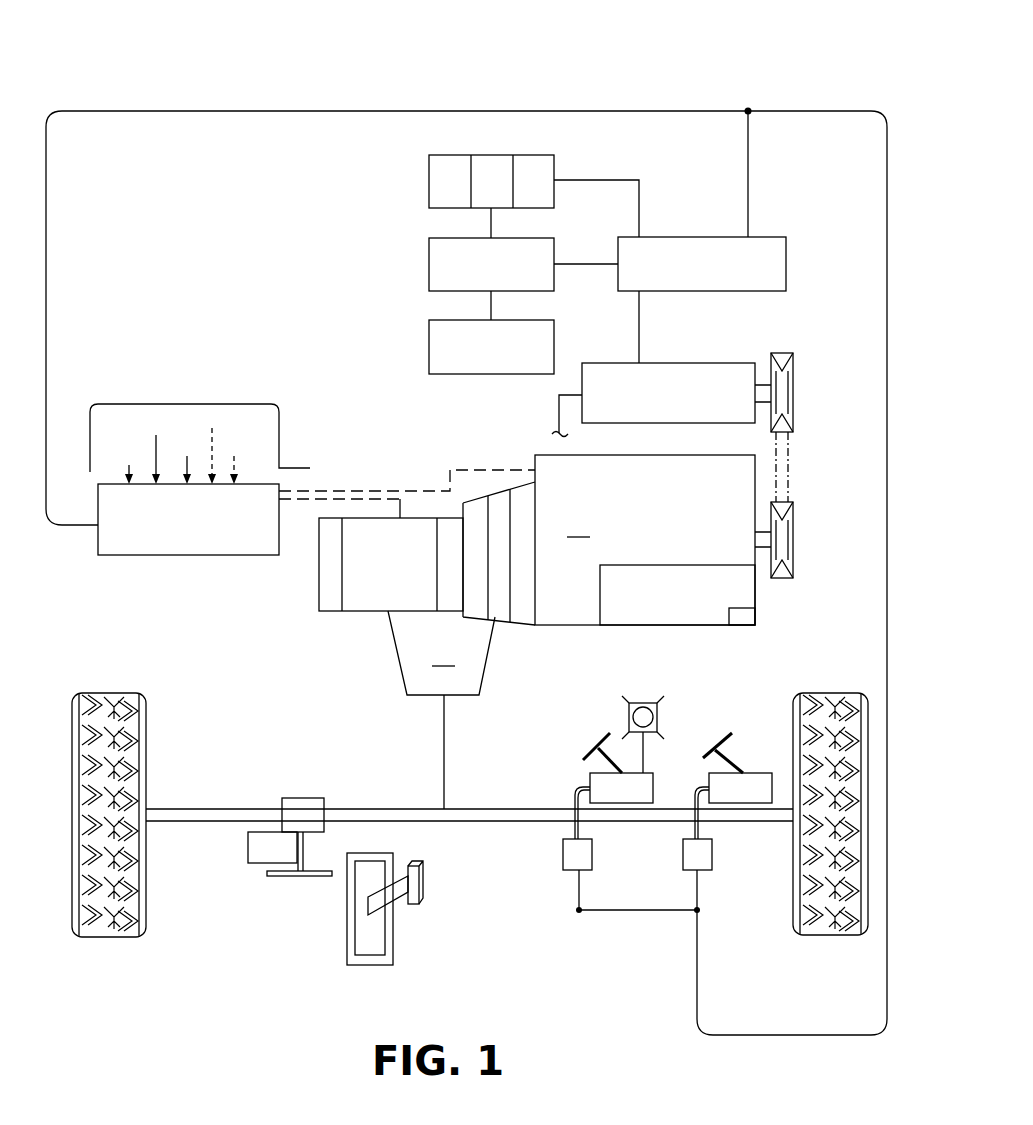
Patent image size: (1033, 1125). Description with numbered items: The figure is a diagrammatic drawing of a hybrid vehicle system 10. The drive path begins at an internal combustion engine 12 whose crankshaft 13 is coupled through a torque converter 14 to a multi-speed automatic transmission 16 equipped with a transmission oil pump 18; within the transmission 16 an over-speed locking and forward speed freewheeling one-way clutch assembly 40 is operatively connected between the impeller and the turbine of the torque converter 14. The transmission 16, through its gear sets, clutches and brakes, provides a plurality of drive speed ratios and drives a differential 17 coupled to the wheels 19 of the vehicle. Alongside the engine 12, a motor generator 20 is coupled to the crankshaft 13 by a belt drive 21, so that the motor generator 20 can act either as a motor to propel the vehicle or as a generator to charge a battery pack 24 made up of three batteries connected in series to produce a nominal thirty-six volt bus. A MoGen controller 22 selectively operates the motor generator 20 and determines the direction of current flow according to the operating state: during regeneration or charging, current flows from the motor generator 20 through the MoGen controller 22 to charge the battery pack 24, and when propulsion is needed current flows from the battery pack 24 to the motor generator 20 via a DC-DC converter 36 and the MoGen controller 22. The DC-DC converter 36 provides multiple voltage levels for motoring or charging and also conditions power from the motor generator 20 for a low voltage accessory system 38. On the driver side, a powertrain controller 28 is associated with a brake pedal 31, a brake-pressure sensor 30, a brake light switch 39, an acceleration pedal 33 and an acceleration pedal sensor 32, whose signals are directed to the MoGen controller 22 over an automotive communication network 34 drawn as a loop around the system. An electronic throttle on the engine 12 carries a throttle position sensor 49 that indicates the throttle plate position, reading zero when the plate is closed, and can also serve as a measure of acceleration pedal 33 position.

The hybrid vehicle system 10 is at (305, 87).
The internal combustion engine 12 is at (645, 540).
The crankshaft 13 is at (760, 540).
The torque converter 14 is at (524, 624).
The multi-speed automatic transmission 16 is at (365, 614).
The differential 17 is at (441, 710).
The transmission oil pump 18 is at (450, 528).
The wheels 19 is at (104, 917).
The motor generator 20 is at (727, 372).
The belt drive 21 is at (790, 478).
The MoGen controller 22 is at (773, 242).
The battery pack 24 is at (482, 155).
The powertrain controller 28 is at (160, 555).
The brake-pressure sensor 30 is at (585, 857).
The brake pedal 31 is at (588, 753).
The acceleration pedal sensor 32 is at (705, 857).
The acceleration pedal 33 is at (718, 738).
The automotive communication network 34 is at (791, 108).
The DC-DC converter 36 is at (429, 255).
The low voltage accessory system 38 is at (429, 337).
The brake light switch 39 is at (660, 706).
The one-way clutch assembly 40 is at (500, 503).
The throttle position sensor 49 is at (751, 618).